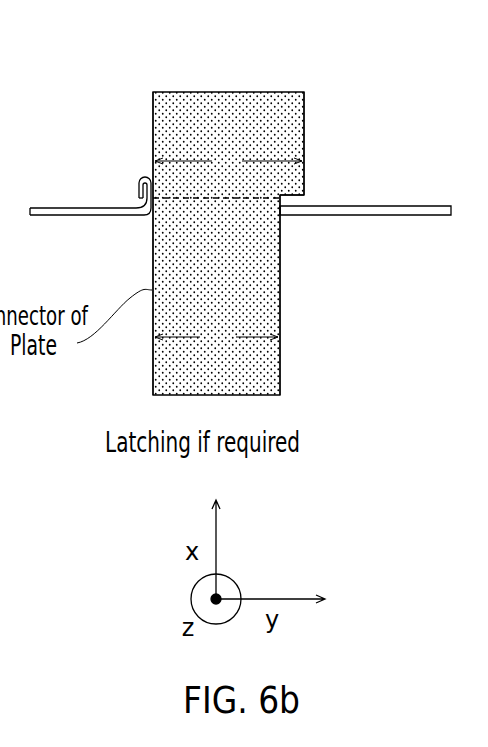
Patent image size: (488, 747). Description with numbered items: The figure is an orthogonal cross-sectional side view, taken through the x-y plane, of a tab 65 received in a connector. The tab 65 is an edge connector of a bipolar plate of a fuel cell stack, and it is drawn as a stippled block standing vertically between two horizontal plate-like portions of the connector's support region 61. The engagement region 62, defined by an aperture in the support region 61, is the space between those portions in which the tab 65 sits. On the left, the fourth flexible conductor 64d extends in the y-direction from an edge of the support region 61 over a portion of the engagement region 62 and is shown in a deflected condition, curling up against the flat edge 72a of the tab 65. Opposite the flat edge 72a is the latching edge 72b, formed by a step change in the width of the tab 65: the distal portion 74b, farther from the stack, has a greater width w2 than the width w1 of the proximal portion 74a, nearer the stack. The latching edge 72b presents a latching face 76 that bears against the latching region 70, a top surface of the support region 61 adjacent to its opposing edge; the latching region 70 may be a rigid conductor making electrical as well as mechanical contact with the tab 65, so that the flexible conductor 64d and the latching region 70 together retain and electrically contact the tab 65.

The support region 61 is at (90, 205).
The engagement region 62 is at (287, 229).
The fourth flexible conductor 64d is at (140, 197).
The tab 65 is at (244, 92).
The latching region 70 is at (299, 205).
The flat edge 72a is at (150, 135).
The latching edge 72b is at (304, 105).
The proximal portion 74a is at (248, 262).
The distal portion 74b is at (218, 133).
The latching face 76 is at (294, 190).